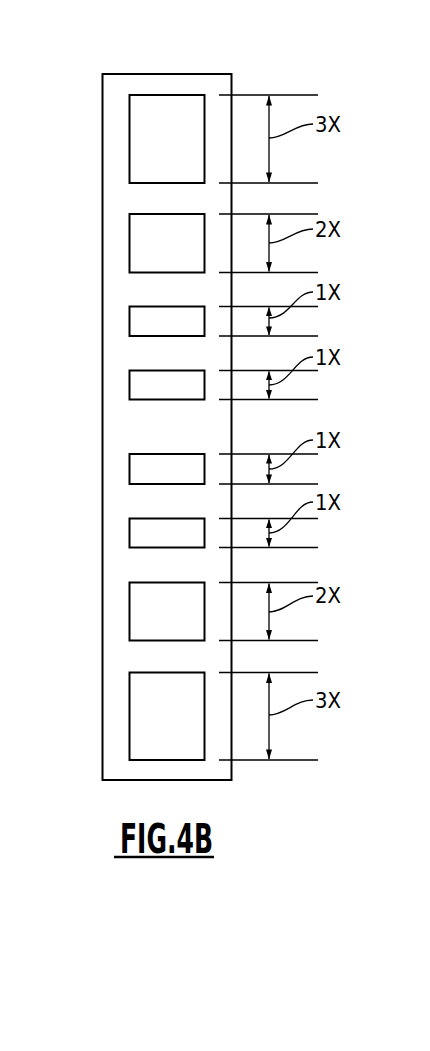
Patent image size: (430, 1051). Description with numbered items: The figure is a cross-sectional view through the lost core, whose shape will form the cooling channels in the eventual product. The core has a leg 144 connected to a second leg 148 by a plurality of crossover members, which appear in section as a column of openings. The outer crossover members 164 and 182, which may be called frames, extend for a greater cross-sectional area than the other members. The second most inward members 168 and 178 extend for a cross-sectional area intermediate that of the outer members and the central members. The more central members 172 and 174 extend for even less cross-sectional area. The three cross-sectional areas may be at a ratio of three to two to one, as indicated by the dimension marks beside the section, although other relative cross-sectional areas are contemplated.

The leg 144 is at (120, 83).
The leg 148 is at (0, 235).
The outer crossover member 164 is at (158, 115).
The second most inward member 168 is at (155, 247).
The central member 172 is at (155, 322).
The central member 174 is at (155, 534).
The second most inward member 178 is at (155, 610).
The outer crossover member 182 is at (155, 720).